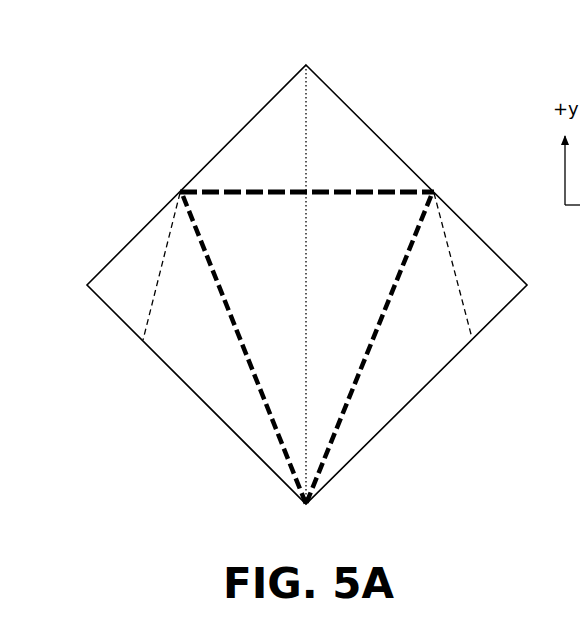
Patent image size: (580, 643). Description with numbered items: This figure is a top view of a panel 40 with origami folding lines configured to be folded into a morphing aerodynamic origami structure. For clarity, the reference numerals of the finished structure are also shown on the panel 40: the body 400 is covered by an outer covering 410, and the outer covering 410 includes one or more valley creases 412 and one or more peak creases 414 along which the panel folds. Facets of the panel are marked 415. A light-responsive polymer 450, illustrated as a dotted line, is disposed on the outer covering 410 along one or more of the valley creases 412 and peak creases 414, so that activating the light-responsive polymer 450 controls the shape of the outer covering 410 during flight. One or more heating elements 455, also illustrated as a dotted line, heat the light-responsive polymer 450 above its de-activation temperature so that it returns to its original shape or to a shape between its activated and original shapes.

The panel 40 is at (398, 50).
The body 400 is at (388, 88).
The outer covering 410 is at (478, 218).
The valley creases 412 is at (472, 313).
The peak creases 414 is at (305, 102).
The facets 415 is at (284, 156).
The light-responsive polymer 450 is at (400, 187).
The heating elements 455 is at (360, 187).